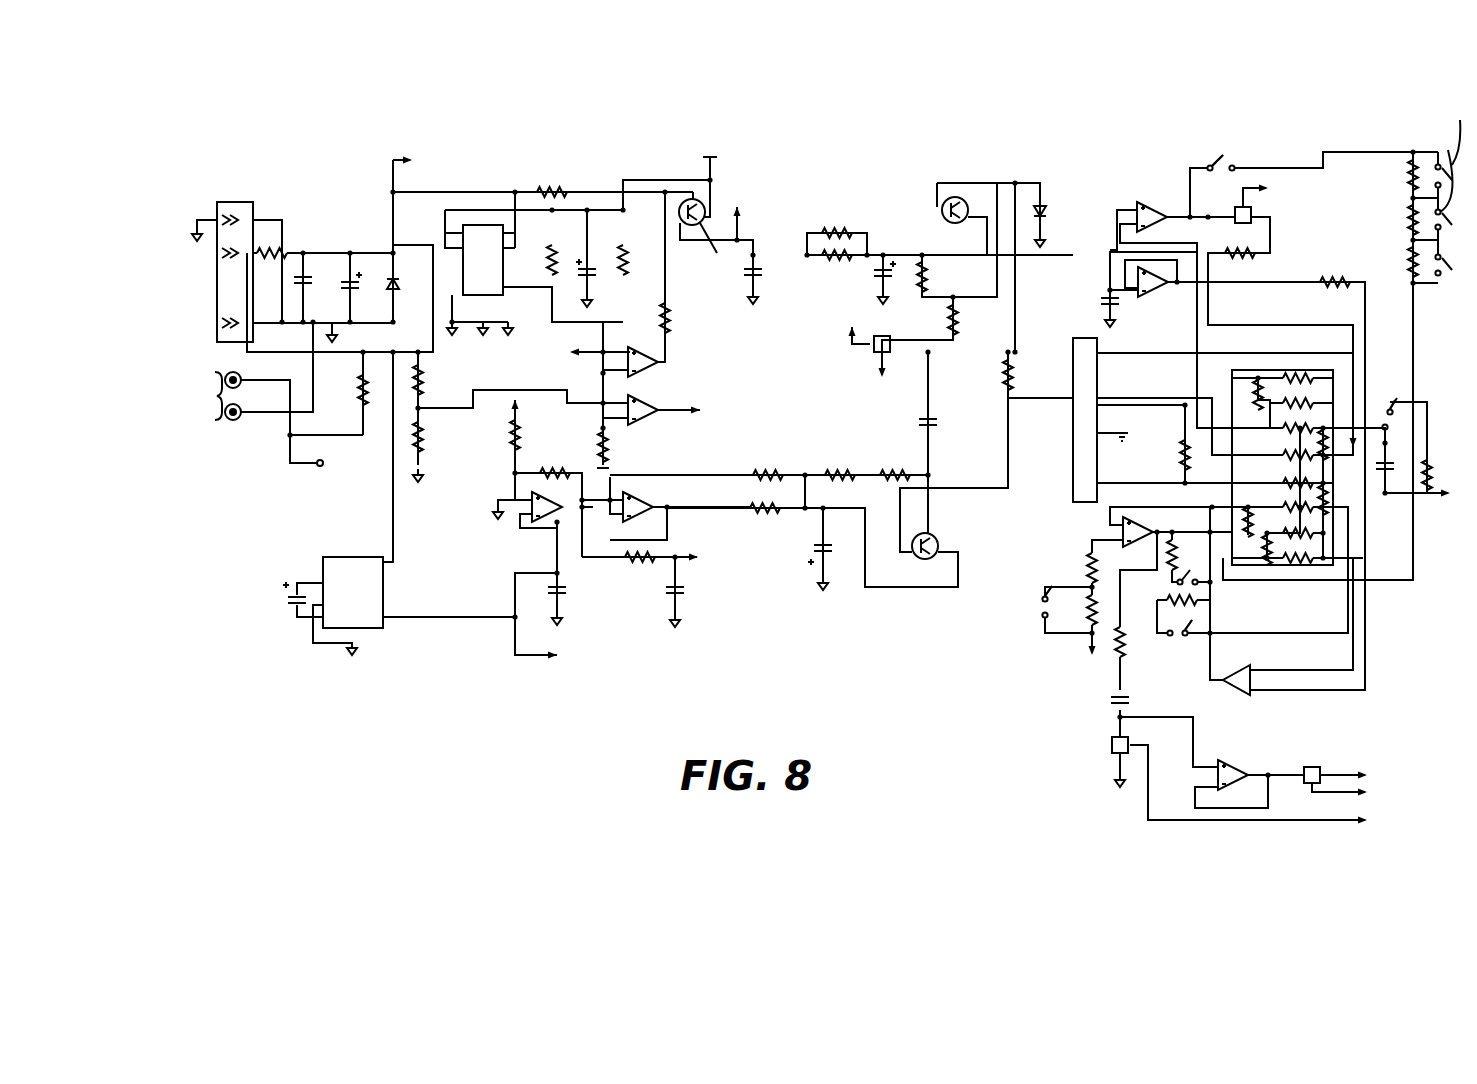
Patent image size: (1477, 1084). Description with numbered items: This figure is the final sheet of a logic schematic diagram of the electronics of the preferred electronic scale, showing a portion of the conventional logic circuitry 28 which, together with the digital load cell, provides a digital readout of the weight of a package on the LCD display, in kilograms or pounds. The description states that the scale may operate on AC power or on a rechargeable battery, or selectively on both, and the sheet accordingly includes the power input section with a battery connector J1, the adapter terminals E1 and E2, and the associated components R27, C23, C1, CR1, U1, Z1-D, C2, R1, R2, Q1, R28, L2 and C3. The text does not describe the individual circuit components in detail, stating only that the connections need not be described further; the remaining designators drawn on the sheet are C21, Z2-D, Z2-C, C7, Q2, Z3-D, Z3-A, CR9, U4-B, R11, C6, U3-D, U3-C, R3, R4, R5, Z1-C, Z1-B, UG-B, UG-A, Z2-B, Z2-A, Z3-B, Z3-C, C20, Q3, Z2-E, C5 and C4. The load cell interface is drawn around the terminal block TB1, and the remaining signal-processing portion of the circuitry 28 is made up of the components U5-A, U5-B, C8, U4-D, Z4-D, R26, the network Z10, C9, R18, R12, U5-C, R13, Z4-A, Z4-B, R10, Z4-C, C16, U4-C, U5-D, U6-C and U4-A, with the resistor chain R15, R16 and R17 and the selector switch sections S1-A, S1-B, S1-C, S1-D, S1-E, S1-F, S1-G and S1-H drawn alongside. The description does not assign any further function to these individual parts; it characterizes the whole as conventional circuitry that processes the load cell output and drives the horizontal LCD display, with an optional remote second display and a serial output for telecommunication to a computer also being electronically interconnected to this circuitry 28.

The logic circuitry 28 is at (840, 153).
The battery connector J1 is at (243, 203).
The resistor R27 is at (268, 240).
The capacitor C23 is at (316, 269).
The capacitor C1 is at (350, 288).
The diode CR1 is at (408, 272).
The voltage regulator U1 is at (463, 268).
The resistor network element Z1-D is at (552, 248).
The capacitor C2 is at (594, 272).
The resistor R1 is at (555, 188).
The resistor R2 is at (628, 262).
The transistor Q1 is at (691, 239).
The capacitor C21 is at (771, 281).
The resistor network element Z2-D is at (838, 230).
The resistor network element Z2-C is at (838, 262).
The capacitor C7 is at (893, 276).
The transistor Q2 is at (945, 222).
The resistor network element Z3-D is at (928, 276).
The resistor network element Z3-A is at (958, 324).
The diode CR9 is at (1068, 206).
The switch section U4-B is at (874, 352).
The resistor R11 is at (1003, 378).
The terminal block TB1 is at (1080, 338).
The capacitor C6 is at (920, 420).
The comparator U3-D is at (656, 370).
The comparator U3-C is at (650, 420).
The resistor R3 is at (423, 380).
The resistor R4 is at (423, 437).
The resistor R5 is at (617, 450).
The resistor network element Z1-C is at (553, 460).
The resistor network element Z1-B is at (512, 445).
The operational amplifier UG-B is at (545, 522).
The operational amplifier UG-A is at (640, 498).
The resistor network element Z2-B is at (770, 470).
The resistor network element Z2-A is at (765, 520).
The resistor network element Z3-B is at (842, 470).
The resistor network element Z3-C is at (905, 470).
The capacitor C20 is at (816, 556).
The transistor Q3 is at (918, 560).
The resistor network element Z2-E is at (633, 573).
The capacitor C5 is at (666, 598).
The capacitor C4 is at (566, 598).
The capacitor C3 is at (288, 600).
The voltage converter L2 is at (353, 557).
The resistor R28 is at (358, 386).
The adapter terminal E1 is at (233, 370).
The adapter terminal E2 is at (233, 425).
The operational amplifier U5-A is at (1153, 203).
The operational amplifier U5-B is at (1150, 300).
The capacitor C8 is at (1102, 298).
The switch section S1-A is at (1222, 160).
The switch section U4-D is at (1252, 216).
The resistor network element Z4-D is at (1255, 257).
The resistor R15 is at (1408, 178).
The resistor R16 is at (1408, 218).
The resistor R17 is at (1408, 266).
The switch section S1-B is at (1419, 102).
The switch section S1-C is at (1390, 136).
The switch section S1-D is at (1440, 306).
The resistor R26 is at (1327, 298).
The resistor network Z10 is at (1292, 368).
The switch section S1-E is at (1382, 408).
The capacitor C9 is at (1396, 454).
The resistor R18 is at (1432, 493).
The resistor R12 is at (1182, 448).
The operational amplifier U5-C is at (1115, 538).
The resistor R13 is at (1188, 555).
The resistor network element Z4-A is at (1086, 568).
The switch section S1-G is at (1042, 612).
The resistor network element Z4-B is at (1086, 632).
The switch section S1-F is at (1178, 588).
The resistor R10 is at (1192, 604).
The switch section S1-H is at (1180, 640).
The resistor network element Z4-C is at (1110, 660).
The capacitor C16 is at (1130, 697).
The switch section U4-C is at (1112, 745).
The operational amplifier U5-D is at (1231, 696).
The operational amplifier U6-C is at (1240, 760).
The switch section U4-A is at (1312, 767).